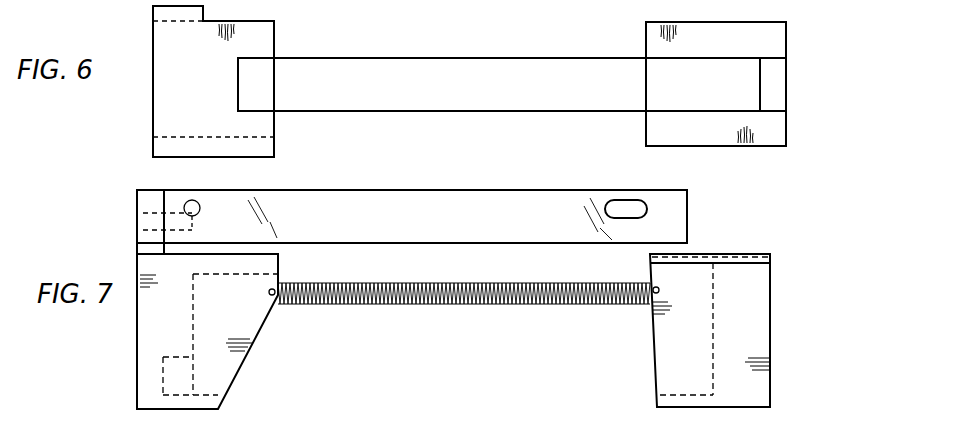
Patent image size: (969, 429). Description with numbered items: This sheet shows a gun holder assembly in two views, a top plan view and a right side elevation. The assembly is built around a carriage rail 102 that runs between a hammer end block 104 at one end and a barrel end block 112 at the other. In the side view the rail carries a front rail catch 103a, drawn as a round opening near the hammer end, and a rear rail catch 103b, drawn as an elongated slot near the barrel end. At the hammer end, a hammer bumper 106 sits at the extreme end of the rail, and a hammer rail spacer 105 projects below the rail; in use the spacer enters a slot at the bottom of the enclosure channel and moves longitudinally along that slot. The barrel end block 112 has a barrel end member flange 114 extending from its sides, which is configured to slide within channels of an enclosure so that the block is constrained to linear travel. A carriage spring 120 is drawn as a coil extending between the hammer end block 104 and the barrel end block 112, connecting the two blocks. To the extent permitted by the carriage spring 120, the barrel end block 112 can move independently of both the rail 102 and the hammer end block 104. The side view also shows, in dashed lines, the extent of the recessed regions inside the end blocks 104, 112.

In FIG. 6, the carriage rail 102 is at (519, 57).
In FIG. 7, the carriage rail 102 is at (475, 198).
In FIG. 7, the front rail catch 103a is at (195, 200).
In FIG. 7, the rear rail catch 103b is at (614, 200).
In FIG. 6, the hammer end block 104 is at (777, 35).
In FIG. 7, the hammer end block 104 is at (143, 351).
In FIG. 7, the hammer rail spacer 105 is at (222, 250).
In FIG. 6, the hammer bumper 106 is at (777, 88).
In FIG. 7, the hammer bumper 106 is at (145, 202).
In FIG. 6, the barrel end block 112 is at (276, 43).
In FIG. 7, the barrel end block 112 is at (758, 337).
In FIG. 6, the barrel end member flange 114 is at (155, 21).
In FIG. 7, the barrel end member flange 114 is at (768, 258).
In FIG. 7, the carriage spring 120 is at (386, 298).